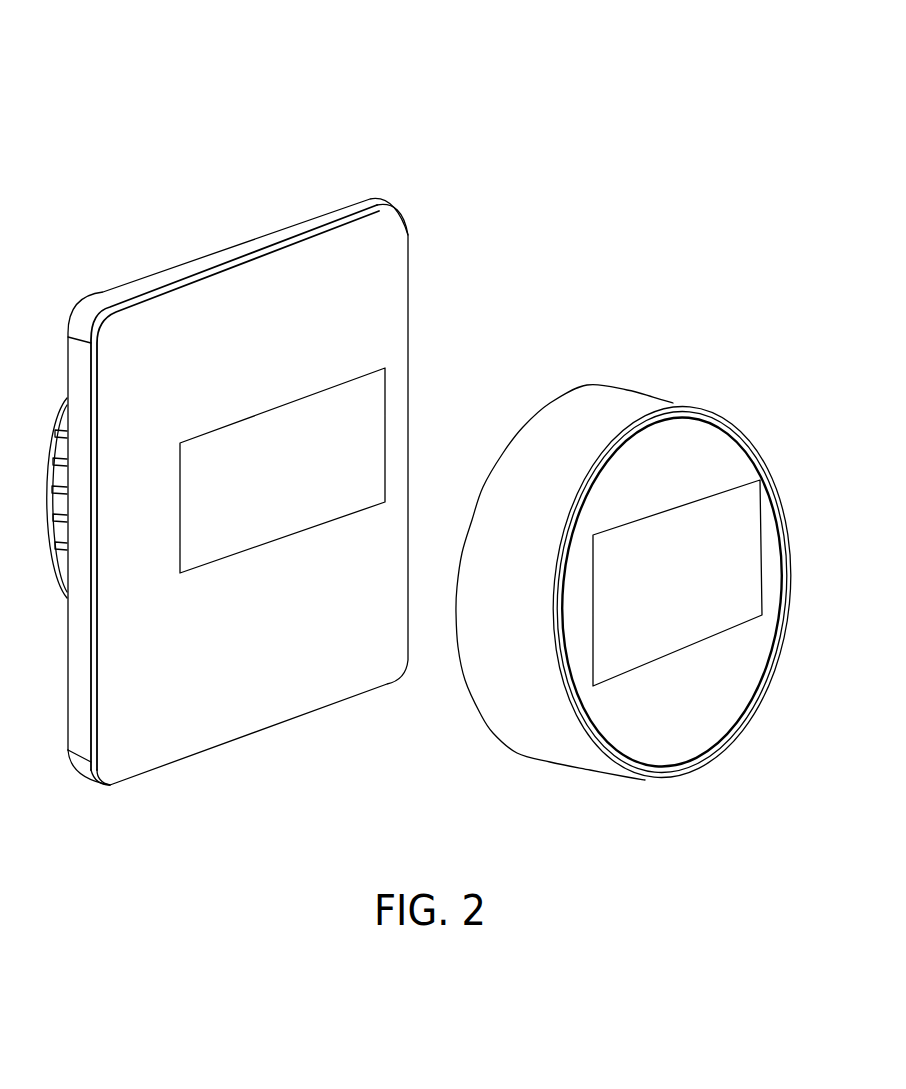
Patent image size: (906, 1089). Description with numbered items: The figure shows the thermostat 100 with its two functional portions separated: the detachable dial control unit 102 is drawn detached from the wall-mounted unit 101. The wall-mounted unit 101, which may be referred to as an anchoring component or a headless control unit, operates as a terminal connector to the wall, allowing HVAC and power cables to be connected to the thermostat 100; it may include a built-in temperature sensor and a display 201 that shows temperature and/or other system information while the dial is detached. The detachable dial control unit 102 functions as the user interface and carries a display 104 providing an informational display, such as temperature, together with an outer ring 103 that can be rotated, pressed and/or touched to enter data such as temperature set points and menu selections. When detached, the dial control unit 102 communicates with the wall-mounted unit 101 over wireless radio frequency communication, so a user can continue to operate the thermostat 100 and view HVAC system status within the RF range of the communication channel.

The thermostat 100 is at (786, 37).
The wall-mounted unit 101 is at (407, 253).
The display 201 is at (182, 440).
The detachable dial control unit 102 is at (488, 733).
The outer ring 103 is at (705, 407).
The display 104 is at (653, 660).